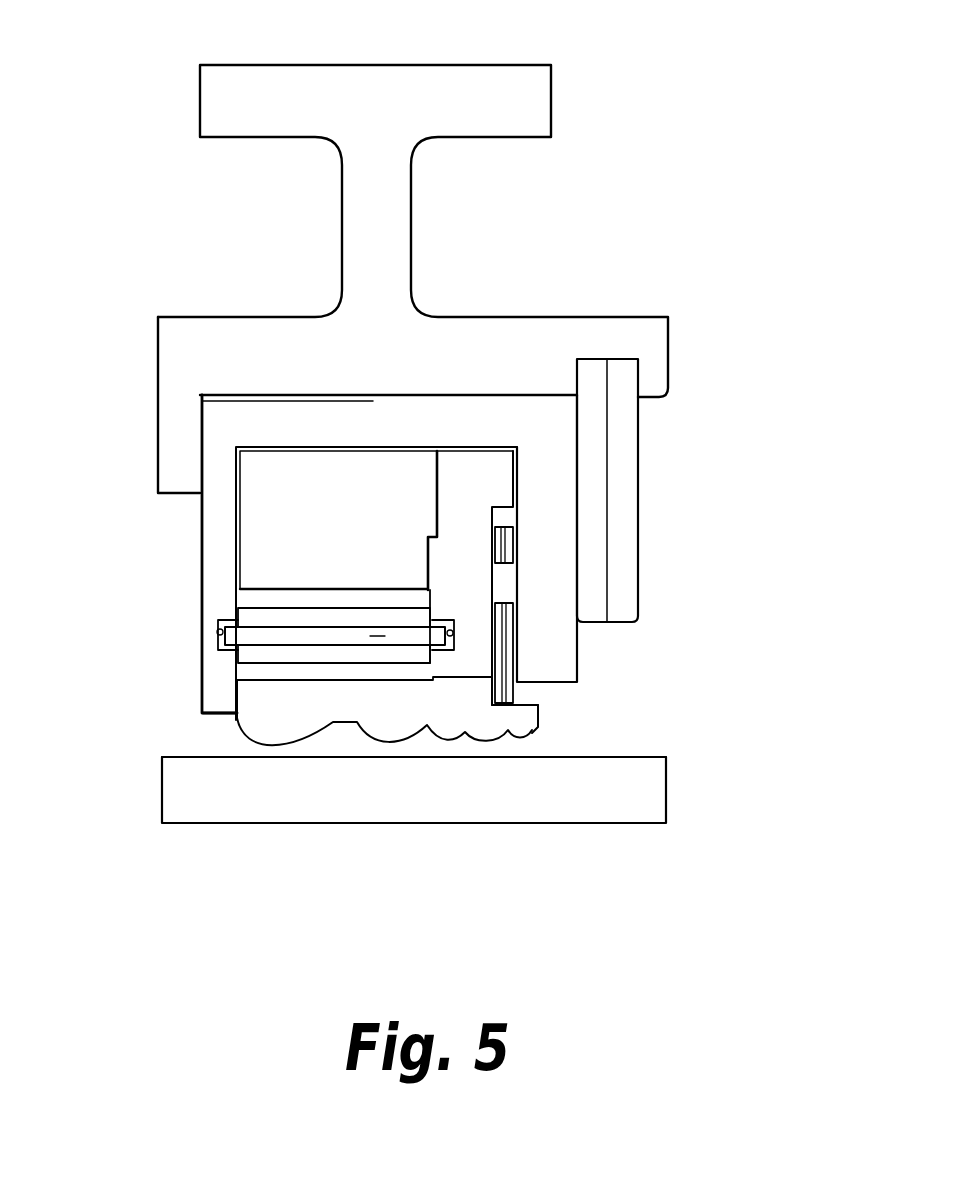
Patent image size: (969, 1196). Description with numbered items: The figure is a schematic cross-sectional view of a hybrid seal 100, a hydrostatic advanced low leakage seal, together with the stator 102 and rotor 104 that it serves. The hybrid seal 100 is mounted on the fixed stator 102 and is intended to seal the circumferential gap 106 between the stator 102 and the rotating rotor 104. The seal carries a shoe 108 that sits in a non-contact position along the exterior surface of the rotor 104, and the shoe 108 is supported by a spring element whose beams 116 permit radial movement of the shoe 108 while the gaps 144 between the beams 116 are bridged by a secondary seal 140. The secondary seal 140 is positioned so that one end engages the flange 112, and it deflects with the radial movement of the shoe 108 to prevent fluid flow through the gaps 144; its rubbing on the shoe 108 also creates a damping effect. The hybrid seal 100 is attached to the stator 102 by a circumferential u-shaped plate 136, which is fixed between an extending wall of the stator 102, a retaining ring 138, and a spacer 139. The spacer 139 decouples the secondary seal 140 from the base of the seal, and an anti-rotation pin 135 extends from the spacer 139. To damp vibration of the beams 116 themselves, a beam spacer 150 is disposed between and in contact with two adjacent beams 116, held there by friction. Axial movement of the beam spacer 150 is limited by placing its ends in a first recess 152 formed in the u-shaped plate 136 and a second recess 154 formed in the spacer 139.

The hybrid seal 100 is at (216, 728).
The stator 102 is at (492, 65).
The rotor 104 is at (668, 782).
The circumferential gap 106 is at (496, 749).
The shoe 108 is at (250, 737).
The flange 112 is at (537, 718).
The beam 116 is at (270, 613).
The anti-rotation pin 135 is at (515, 578).
The u-shaped plate 136 is at (210, 538).
The retaining ring 138 is at (640, 470).
The spacer 139 is at (483, 480).
The secondary seal 140 is at (515, 694).
The gap 144 is at (258, 599).
The beam spacer 150 is at (377, 637).
The first recess 152 is at (222, 632).
The second recess 154 is at (452, 634).